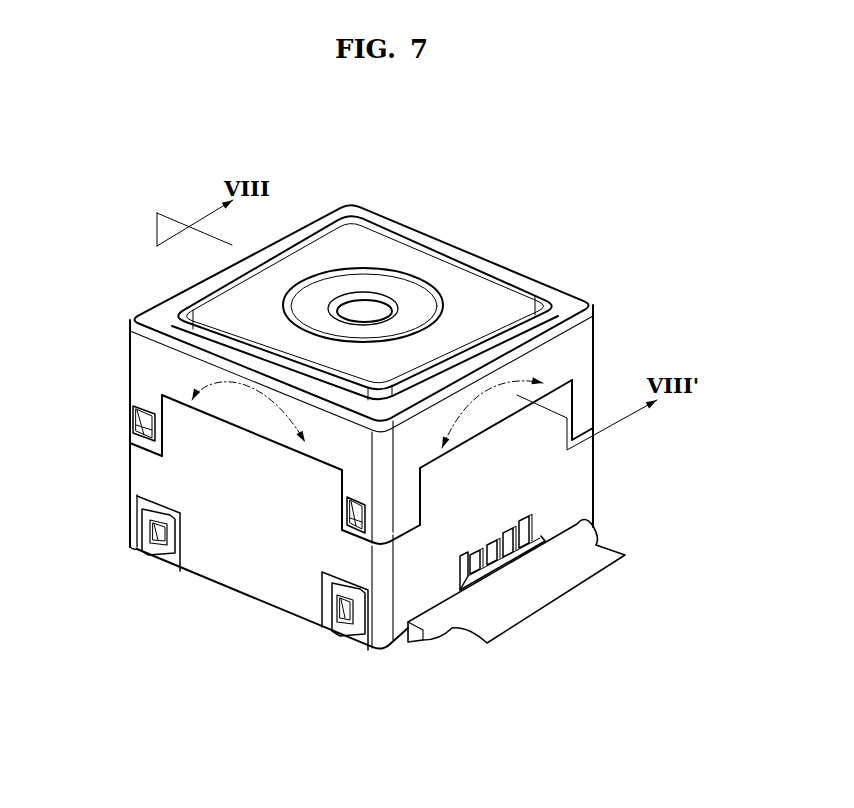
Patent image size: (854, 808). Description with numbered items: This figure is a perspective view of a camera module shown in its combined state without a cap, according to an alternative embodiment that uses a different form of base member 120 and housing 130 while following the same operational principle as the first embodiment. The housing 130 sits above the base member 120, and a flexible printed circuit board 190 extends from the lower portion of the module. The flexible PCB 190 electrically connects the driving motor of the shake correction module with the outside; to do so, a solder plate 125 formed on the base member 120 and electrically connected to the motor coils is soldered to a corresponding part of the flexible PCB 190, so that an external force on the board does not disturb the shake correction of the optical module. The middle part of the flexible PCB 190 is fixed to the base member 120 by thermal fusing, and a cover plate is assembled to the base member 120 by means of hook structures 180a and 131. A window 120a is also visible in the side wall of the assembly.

The housing 130 is at (145, 372).
The housing window 120a is at (140, 432).
The base member 120 is at (252, 578).
The hook structure 131 is at (334, 624).
The hook structure 180a is at (347, 625).
The solder plate 125 is at (468, 582).
The flexible printed circuit board 190 is at (494, 618).